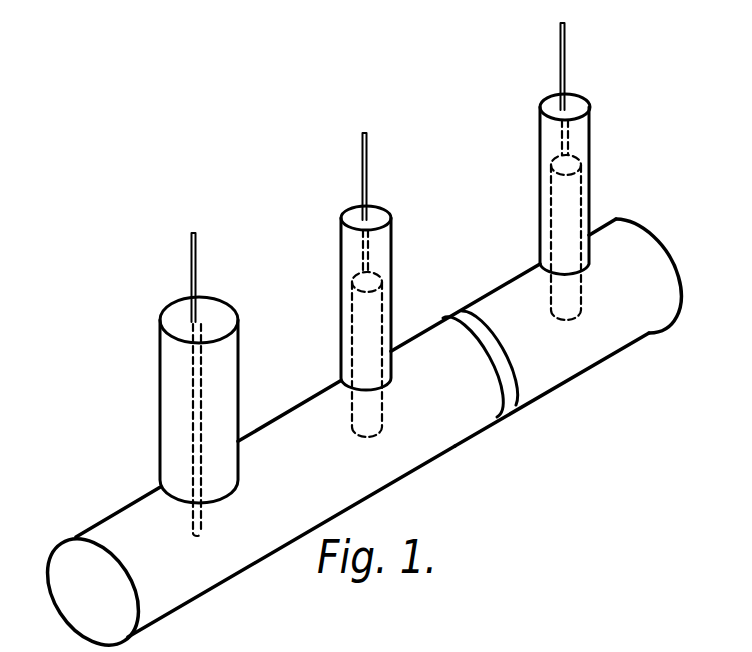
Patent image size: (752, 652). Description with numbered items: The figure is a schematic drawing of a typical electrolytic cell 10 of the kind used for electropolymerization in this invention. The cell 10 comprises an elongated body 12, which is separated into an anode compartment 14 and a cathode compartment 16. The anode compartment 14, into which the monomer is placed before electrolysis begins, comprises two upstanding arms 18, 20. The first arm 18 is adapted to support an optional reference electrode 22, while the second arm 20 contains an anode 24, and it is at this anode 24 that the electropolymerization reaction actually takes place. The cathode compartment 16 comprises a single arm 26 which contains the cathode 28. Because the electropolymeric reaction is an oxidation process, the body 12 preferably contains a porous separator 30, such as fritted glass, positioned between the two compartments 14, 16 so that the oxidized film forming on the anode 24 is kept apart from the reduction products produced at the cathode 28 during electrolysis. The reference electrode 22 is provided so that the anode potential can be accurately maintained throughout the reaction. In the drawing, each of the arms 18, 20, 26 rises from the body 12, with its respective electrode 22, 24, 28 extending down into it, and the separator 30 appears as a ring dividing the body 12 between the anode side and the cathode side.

The cell 10 is at (124, 427).
The body 12 is at (190, 592).
The anode compartment 14 is at (378, 462).
The cathode compartment 16 is at (577, 352).
The arm 18 is at (238, 363).
The arm 20 is at (391, 253).
The reference electrode 22 is at (197, 268).
The anode 24 is at (367, 170).
The arm 26 is at (589, 152).
The cathode 28 is at (565, 62).
The porous separator 30 is at (510, 392).